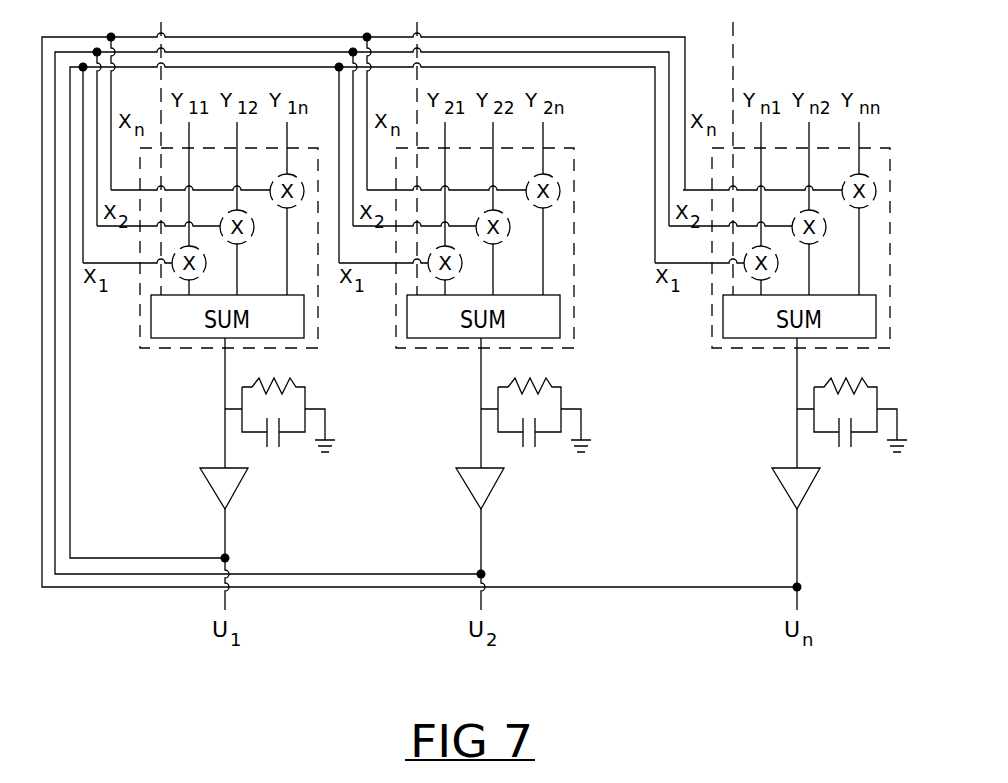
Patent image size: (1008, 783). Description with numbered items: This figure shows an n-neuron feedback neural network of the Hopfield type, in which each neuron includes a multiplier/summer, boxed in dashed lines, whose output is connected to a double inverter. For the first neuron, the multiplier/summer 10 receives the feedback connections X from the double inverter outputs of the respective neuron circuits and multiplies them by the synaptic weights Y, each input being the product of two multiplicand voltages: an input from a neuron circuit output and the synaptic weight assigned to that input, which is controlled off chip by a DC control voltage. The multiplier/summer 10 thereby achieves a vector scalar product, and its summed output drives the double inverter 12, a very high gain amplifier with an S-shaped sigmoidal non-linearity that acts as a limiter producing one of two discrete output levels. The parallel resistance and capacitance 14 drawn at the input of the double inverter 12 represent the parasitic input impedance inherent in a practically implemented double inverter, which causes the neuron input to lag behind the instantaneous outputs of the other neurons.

The multiplier/summer 10 is at (180, 350).
The double inverter 12 is at (212, 467).
The parallel resistance and capacitance 14 is at (278, 456).